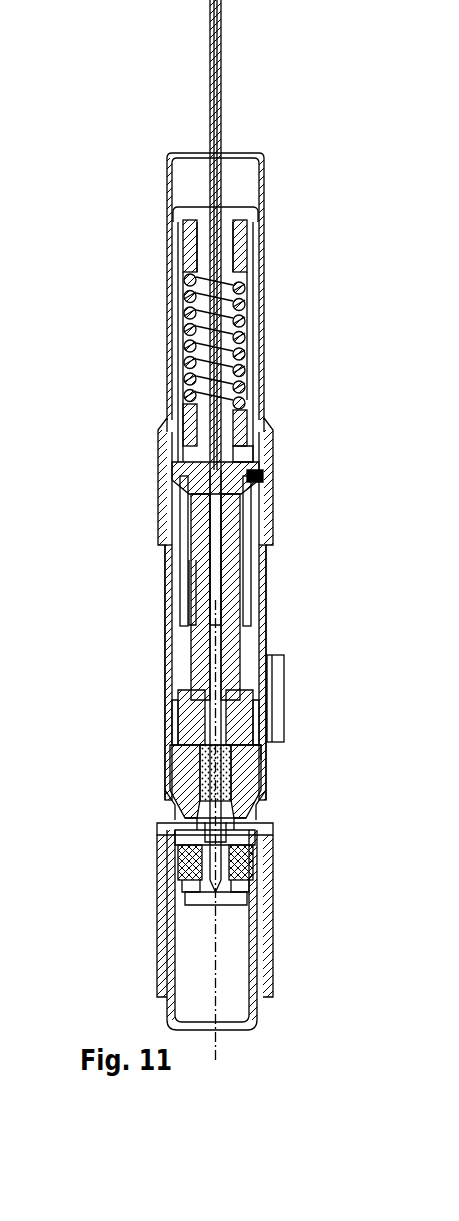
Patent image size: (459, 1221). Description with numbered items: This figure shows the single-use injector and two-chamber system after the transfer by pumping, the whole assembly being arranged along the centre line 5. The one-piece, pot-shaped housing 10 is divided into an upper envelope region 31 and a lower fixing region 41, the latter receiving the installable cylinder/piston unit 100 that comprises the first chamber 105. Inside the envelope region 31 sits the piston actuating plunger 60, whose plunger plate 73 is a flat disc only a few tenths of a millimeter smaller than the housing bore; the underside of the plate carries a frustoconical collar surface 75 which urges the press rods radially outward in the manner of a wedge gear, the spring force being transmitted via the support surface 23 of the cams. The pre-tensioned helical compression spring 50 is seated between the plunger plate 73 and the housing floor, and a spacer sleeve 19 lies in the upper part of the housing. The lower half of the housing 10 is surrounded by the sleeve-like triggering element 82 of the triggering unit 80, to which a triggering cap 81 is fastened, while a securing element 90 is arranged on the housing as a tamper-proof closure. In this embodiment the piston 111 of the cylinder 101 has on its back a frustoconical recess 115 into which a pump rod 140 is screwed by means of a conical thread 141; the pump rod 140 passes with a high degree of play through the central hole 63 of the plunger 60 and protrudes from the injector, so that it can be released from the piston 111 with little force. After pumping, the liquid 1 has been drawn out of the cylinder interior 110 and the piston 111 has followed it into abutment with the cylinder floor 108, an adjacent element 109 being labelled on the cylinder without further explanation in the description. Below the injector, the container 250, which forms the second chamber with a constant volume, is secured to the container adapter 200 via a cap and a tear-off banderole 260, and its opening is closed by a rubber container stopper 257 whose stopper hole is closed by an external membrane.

The water for injection purposes 1 is at (195, 770).
The centre line 5 is at (210, 955).
The housing 10 is at (247, 334).
The spacer sleeve 19 is at (246, 240).
The support surface 23 is at (180, 486).
The envelope region 31 is at (163, 292).
The fixing region 41 is at (160, 668).
The helical compression spring 50 is at (245, 405).
The piston actuating plunger 60 is at (263, 478).
The hole of plunger 63 is at (255, 462).
The plunger plate 73 is at (188, 478).
The collar surface 75 is at (190, 492).
The triggering unit 80 is at (276, 516).
The triggering cap 81 is at (262, 282).
The triggering element 82 is at (263, 568).
The securing element 90 is at (286, 662).
The cylinder/piston unit 100 is at (252, 762).
The cylinder 101 is at (255, 822).
The chamber 105 is at (250, 695).
The cylinder floor 108 is at (255, 805).
The shoulder 109 is at (260, 745).
The cylinder interior 110 is at (262, 778).
The piston 111 is at (250, 712).
The recess 115 is at (195, 607).
The pump rod 140 is at (185, 366).
The conical thread 141 is at (223, 605).
The container adapter 200 is at (262, 835).
The container 250 is at (252, 943).
The container stopper 257 is at (260, 883).
The tear-off banderole 260 is at (272, 967).